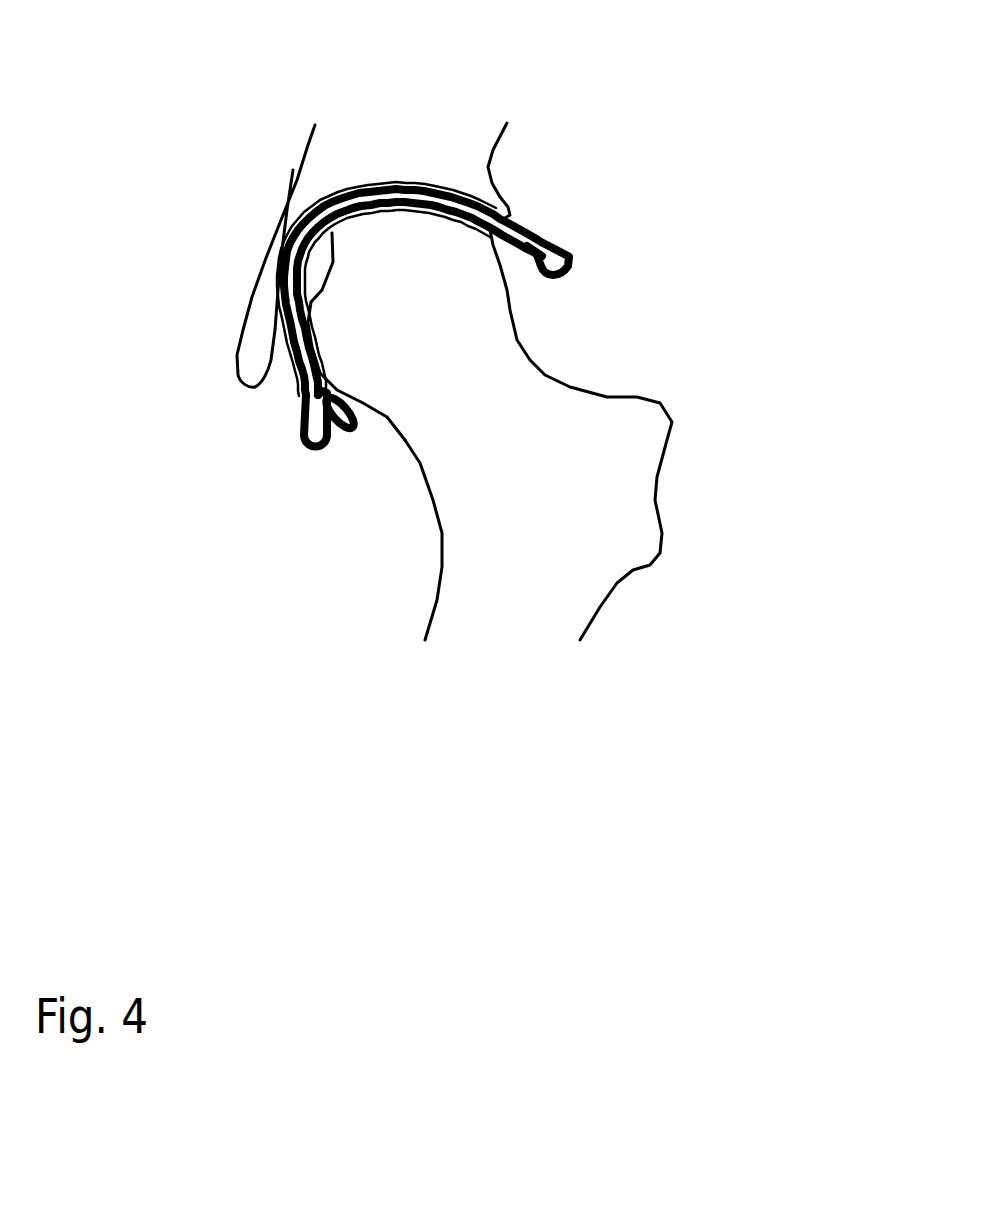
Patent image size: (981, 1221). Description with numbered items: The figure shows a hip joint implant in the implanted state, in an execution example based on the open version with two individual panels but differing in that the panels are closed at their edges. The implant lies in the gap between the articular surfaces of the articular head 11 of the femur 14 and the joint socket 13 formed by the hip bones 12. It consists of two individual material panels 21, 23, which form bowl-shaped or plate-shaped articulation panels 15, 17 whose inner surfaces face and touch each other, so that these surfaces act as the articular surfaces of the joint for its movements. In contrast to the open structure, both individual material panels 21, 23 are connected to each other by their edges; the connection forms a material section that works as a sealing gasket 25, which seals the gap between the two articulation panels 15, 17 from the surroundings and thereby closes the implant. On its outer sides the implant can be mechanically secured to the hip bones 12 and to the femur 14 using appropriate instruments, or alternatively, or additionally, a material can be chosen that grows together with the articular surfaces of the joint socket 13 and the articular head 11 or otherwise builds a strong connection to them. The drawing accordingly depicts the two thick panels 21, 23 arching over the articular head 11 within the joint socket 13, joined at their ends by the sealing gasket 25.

The articular head 11 is at (442, 285).
The hip bones 12 is at (296, 163).
The joint socket 13 is at (391, 279).
The femur 14 is at (433, 608).
The articulation panel 15 is at (295, 376).
The articulation panel 17 is at (318, 385).
The material panel 21 is at (340, 321).
The material panel 23 is at (340, 342).
The sealing gasket 25 is at (300, 466).